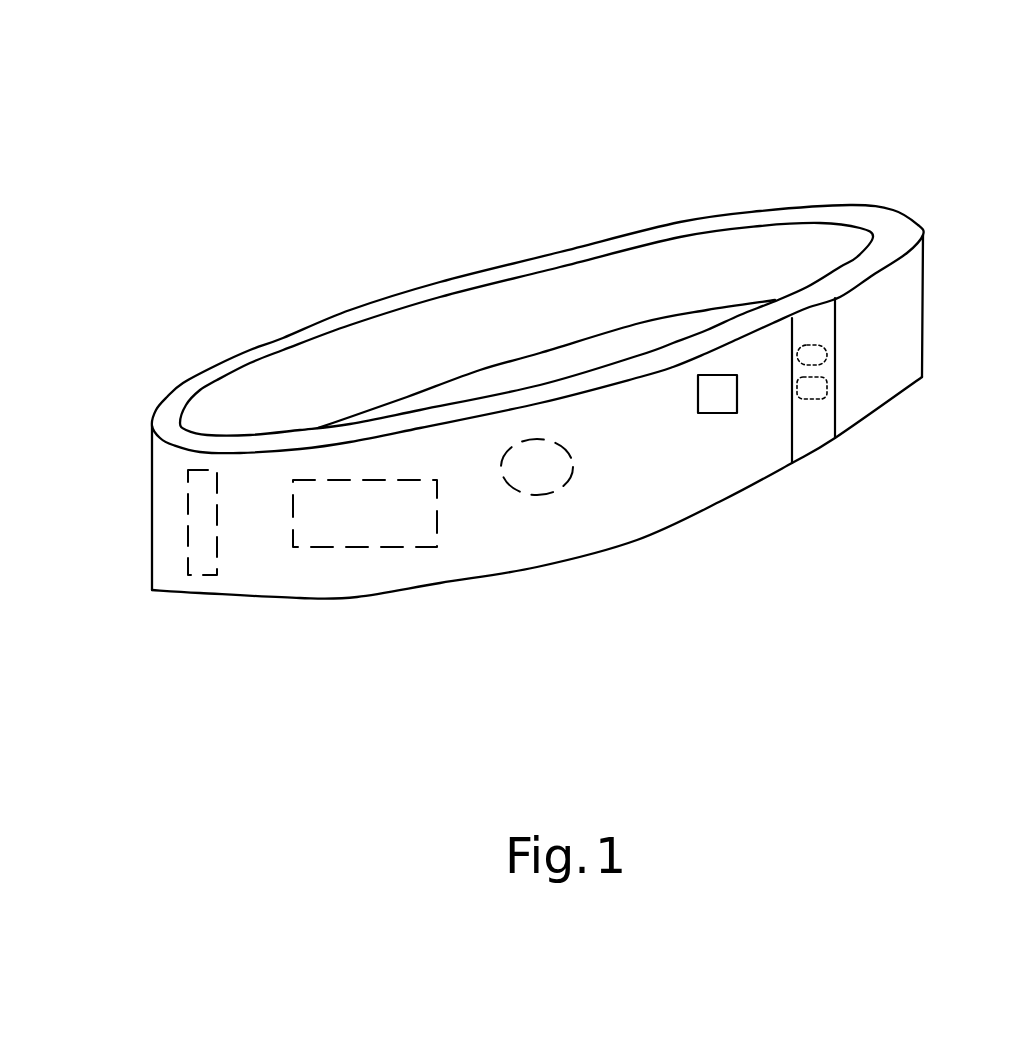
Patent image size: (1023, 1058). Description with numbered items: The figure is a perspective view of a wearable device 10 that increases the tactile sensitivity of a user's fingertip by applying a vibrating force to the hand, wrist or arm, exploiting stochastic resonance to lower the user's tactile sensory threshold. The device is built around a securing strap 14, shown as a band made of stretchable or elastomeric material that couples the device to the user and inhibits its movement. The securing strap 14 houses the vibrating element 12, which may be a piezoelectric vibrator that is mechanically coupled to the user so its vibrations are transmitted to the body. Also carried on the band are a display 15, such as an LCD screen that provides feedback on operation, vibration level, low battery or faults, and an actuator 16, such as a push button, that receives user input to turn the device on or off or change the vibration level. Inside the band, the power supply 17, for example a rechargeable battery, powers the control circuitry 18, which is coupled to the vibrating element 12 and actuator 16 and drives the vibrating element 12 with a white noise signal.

The wearable device 10 is at (578, 320).
The vibrating element 12 is at (537, 480).
The securing strap 14 is at (887, 233).
The display 15 is at (812, 426).
The actuator 16 is at (721, 398).
The power supply 17 is at (197, 563).
The control circuitry 18 is at (356, 533).